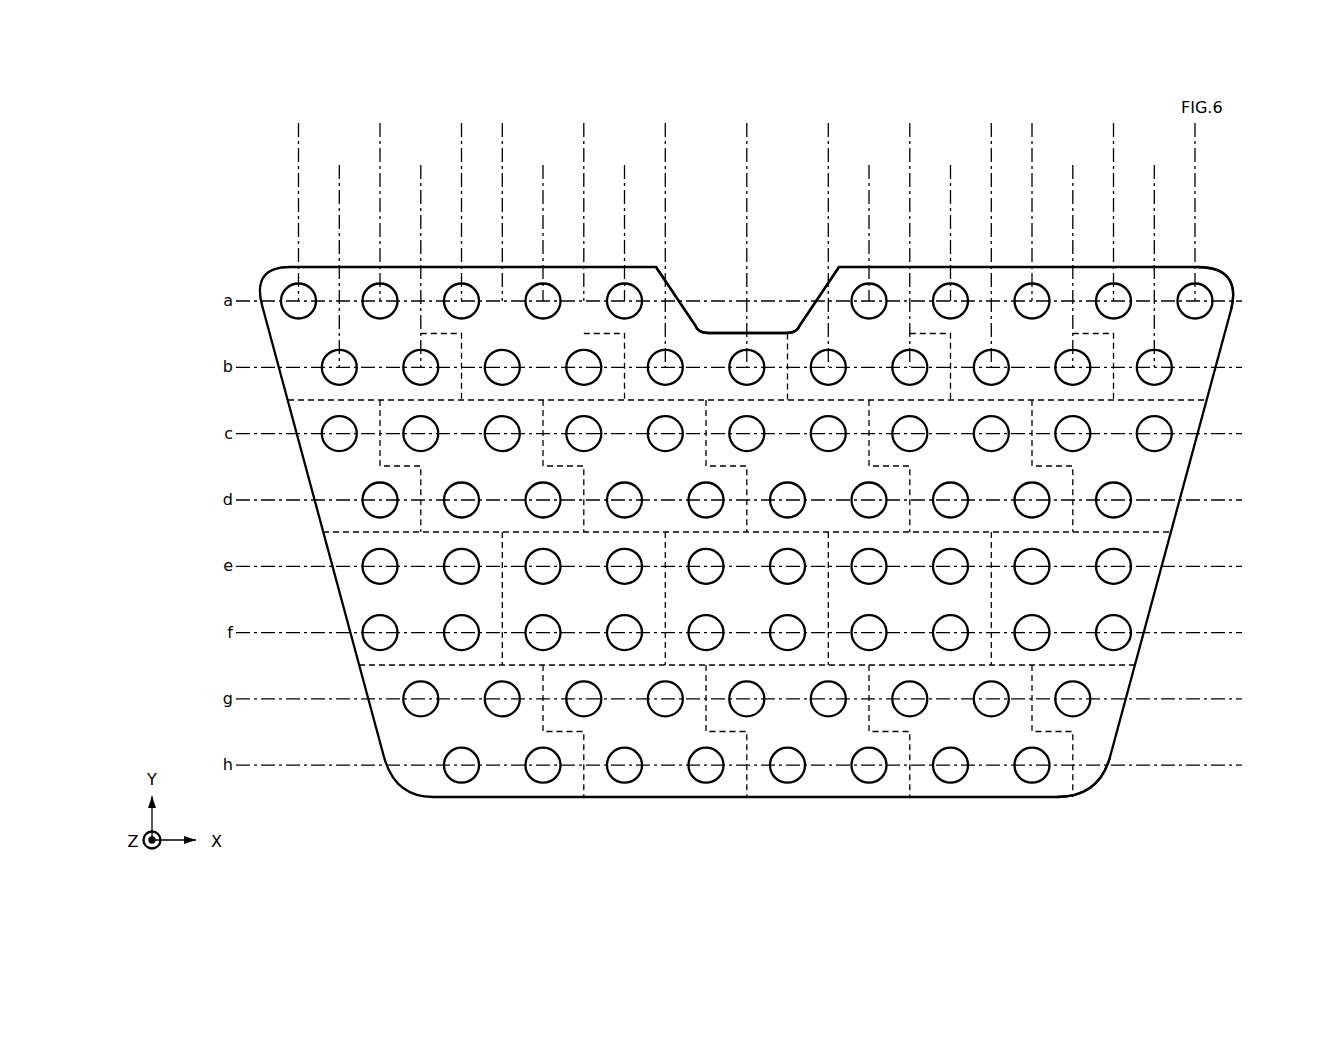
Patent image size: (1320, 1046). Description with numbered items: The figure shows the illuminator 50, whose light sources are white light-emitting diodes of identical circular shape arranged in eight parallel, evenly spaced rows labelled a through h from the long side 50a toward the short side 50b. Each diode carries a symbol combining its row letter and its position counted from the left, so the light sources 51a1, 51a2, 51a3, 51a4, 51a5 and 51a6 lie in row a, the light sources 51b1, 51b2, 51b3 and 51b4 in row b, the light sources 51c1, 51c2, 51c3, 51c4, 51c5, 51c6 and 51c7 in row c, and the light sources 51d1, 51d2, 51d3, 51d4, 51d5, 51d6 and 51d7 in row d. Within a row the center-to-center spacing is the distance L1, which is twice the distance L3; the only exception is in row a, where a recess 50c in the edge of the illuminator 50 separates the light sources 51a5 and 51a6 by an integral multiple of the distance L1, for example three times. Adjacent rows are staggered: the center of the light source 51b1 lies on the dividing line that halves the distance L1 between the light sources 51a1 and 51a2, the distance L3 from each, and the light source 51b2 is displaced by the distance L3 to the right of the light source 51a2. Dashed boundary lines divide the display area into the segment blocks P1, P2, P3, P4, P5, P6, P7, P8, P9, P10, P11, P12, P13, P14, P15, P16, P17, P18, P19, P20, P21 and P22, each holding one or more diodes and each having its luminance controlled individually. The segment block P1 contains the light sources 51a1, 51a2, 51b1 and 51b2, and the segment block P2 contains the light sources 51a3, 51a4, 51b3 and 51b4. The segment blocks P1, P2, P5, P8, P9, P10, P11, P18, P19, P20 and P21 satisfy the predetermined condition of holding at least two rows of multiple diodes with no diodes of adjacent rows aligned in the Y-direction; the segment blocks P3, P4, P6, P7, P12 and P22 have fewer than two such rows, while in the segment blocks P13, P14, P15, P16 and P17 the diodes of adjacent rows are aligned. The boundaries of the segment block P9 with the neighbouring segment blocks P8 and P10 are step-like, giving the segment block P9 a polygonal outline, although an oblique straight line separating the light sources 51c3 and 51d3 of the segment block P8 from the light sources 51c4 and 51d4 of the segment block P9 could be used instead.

The illuminator 50 is at (250, 214).
The long side 50a is at (1210, 268).
The short side 50b is at (1058, 801).
The recess 50c is at (745, 329).
The light source 51a1 is at (286, 289).
The light source 51a2 is at (368, 289).
The light source 51a3 is at (450, 289).
The light source 51a4 is at (531, 289).
The light source 51a5 is at (612, 289).
The light source 51a6 is at (881, 289).
The light source 51b1 is at (330, 352).
The light source 51b2 is at (412, 352).
The light source 51b3 is at (493, 352).
The light source 51b4 is at (575, 352).
The light source 51c1 is at (330, 419).
The light source 51c2 is at (413, 418).
The light source 51c3 is at (494, 449).
The light source 51c4 is at (582, 451).
The light source 51c5 is at (665, 452).
The light source 51c6 is at (750, 451).
The light source 51c7 is at (829, 452).
The light source 51d1 is at (392, 513).
The light source 51d2 is at (474, 513).
The light source 51d3 is at (555, 513).
The light source 51d4 is at (636, 513).
The light source 51d5 is at (718, 513).
The light source 51d6 is at (800, 513).
The light source 51d7 is at (881, 513).
The segment block P1 is at (278, 331).
The segment block P2 is at (480, 385).
The segment block P3 is at (656, 310).
The segment block P4 is at (841, 310).
The segment block P5 is at (1057, 326).
The segment block P6 is at (1217, 312).
The segment block P7 is at (330, 522).
The segment block P8 is at (430, 484).
The segment block P9 is at (698, 416).
The segment block P10 is at (802, 414).
The segment block P11 is at (1013, 458).
The segment block P12 is at (1160, 518).
The segment block P13 is at (360, 598).
The segment block P14 is at (608, 652).
The segment block P15 is at (769, 650).
The segment block P16 is at (970, 606).
The segment block P17 is at (1135, 581).
The segment block P18 is at (441, 793).
The segment block P19 is at (690, 793).
The segment block P20 is at (868, 793).
The segment block P21 is at (1022, 793).
The segment block P22 is at (1120, 681).
The distance L1 is at (379, 135).
The distance L3 is at (300, 197).